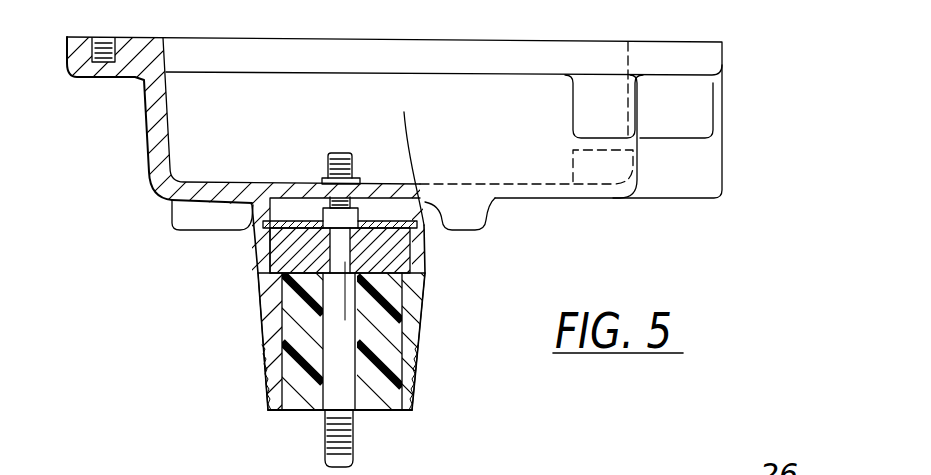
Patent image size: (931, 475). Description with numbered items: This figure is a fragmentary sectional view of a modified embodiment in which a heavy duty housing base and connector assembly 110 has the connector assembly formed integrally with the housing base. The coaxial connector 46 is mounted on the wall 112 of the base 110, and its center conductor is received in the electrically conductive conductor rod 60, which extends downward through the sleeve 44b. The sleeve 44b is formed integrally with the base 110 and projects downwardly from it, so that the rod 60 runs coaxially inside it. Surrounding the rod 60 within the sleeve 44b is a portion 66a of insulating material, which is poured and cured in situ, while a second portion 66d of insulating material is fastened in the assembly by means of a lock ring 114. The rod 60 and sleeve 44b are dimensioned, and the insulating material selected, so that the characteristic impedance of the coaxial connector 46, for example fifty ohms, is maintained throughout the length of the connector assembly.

The housing base and connector assembly 110 is at (726, 83).
The coaxial SMA connector 46 is at (324, 165).
The wall 112 is at (390, 187).
The lock ring 114 is at (403, 240).
The second portion of insulating material 66d is at (272, 265).
The portion of insulating material 66a is at (290, 376).
The conductive rod 60 is at (350, 337).
The sleeve 44b is at (415, 370).